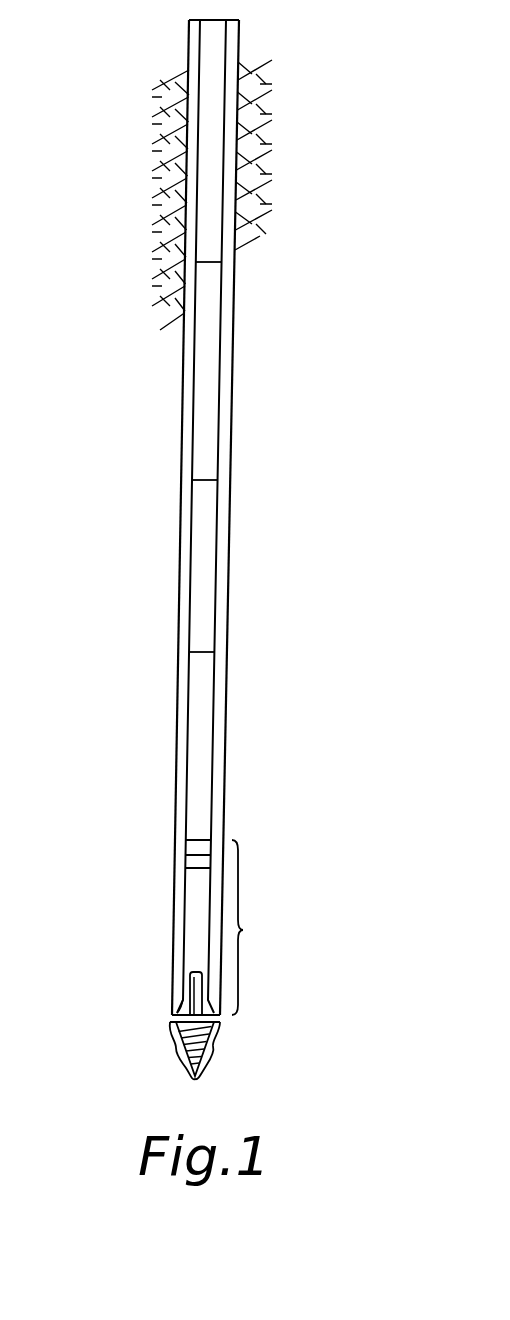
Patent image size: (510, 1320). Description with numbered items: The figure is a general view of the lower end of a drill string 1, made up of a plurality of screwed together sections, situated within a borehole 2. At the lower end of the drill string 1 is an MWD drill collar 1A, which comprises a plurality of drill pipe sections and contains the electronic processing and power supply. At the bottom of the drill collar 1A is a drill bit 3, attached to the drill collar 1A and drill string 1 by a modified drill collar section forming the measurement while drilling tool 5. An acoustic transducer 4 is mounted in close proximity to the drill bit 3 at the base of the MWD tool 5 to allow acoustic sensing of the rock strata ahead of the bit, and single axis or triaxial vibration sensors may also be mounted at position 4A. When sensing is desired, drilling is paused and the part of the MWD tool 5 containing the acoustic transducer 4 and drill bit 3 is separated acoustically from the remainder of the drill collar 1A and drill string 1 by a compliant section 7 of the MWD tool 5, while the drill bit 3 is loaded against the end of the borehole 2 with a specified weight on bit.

The drill string 1 is at (217, 47).
The MWD drill collar 1A is at (205, 528).
The borehole 2 is at (228, 300).
The drill bit 3 is at (200, 1050).
The acoustic transducer 4 is at (190, 977).
The position for vibration sensors 4A is at (178, 997).
The measurement while drilling (MWD) tool 5 is at (247, 927).
The compliant section 7 is at (188, 858).